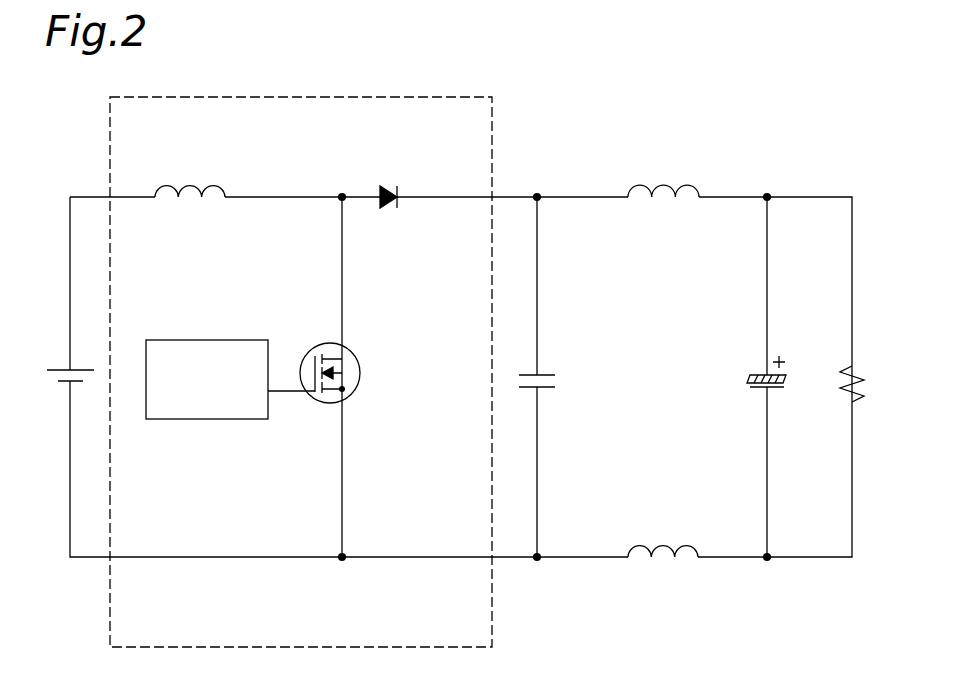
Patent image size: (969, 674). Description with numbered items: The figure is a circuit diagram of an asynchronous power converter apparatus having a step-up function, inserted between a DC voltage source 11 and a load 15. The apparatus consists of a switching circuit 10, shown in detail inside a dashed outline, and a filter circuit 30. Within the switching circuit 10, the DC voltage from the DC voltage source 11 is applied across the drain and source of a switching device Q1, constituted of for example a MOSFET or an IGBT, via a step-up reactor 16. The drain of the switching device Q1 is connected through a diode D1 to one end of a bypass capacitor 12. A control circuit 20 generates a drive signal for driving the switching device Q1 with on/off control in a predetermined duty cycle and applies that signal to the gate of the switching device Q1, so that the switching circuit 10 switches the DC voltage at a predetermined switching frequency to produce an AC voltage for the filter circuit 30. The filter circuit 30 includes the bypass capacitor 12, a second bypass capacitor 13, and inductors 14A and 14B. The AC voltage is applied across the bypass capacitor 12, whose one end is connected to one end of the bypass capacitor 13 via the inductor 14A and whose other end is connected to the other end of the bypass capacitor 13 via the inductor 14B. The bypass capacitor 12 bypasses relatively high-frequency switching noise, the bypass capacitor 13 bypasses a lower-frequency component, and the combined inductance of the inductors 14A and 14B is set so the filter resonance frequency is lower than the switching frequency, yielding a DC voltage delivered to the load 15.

The switching circuit 10 is at (241, 97).
The DC voltage source 11 is at (53, 370).
The bypass capacitor 12 is at (541, 374).
The bypass capacitor 13 is at (786, 364).
The inductor 14A is at (663, 184).
The inductor 14B is at (663, 544).
The load 15 is at (856, 370).
The step-up reactor 16 is at (190, 185).
The control circuit 20 is at (198, 340).
The filter circuit 30 is at (669, 382).
The diode D1 is at (383, 185).
The switching device Q1 is at (348, 394).